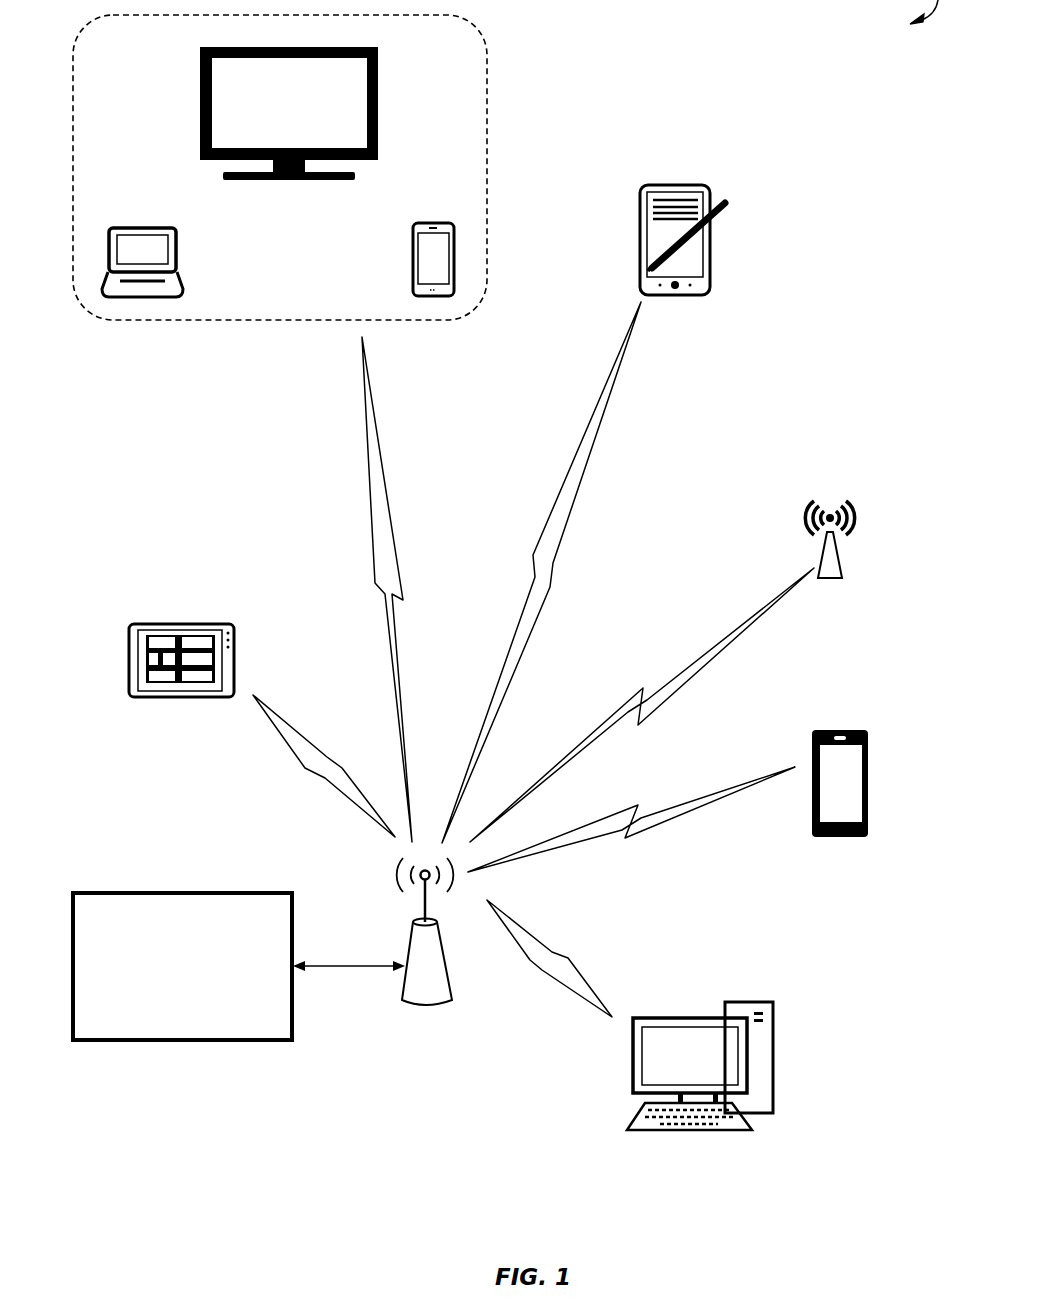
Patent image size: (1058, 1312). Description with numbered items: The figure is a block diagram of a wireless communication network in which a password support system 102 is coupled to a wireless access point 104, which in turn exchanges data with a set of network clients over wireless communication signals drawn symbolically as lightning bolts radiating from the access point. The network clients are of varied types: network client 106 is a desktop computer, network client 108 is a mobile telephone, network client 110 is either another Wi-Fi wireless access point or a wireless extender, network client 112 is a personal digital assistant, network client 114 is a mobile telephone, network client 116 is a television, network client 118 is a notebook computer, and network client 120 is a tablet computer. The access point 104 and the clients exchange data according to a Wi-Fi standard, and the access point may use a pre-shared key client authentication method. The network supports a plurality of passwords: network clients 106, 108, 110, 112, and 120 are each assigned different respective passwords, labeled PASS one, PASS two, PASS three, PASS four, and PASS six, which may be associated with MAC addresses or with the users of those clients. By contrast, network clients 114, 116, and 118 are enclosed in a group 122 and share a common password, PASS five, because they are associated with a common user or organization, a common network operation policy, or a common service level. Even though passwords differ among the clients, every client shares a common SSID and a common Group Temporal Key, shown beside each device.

The password support system 102 is at (198, 1005).
The wireless access point 104 is at (442, 993).
The network client (desktop computer) 106 is at (748, 1002).
The network client (mobile telephone) 108 is at (838, 730).
The network client (wireless access point or wireless extender) 110 is at (831, 513).
The network client (personal digital assistant) 112 is at (675, 185).
The network client (mobile telephone) 114 is at (432, 222).
The network client (television) 116 is at (310, 110).
The network client (notebook computer) 118 is at (140, 227).
The network client (tablet computer) 120 is at (186, 624).
The group 122 is at (143, 61).